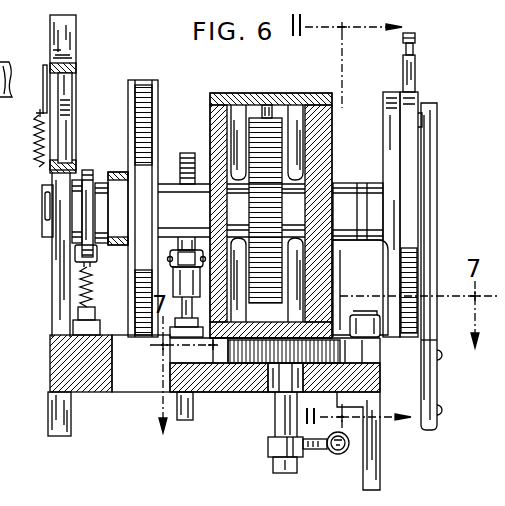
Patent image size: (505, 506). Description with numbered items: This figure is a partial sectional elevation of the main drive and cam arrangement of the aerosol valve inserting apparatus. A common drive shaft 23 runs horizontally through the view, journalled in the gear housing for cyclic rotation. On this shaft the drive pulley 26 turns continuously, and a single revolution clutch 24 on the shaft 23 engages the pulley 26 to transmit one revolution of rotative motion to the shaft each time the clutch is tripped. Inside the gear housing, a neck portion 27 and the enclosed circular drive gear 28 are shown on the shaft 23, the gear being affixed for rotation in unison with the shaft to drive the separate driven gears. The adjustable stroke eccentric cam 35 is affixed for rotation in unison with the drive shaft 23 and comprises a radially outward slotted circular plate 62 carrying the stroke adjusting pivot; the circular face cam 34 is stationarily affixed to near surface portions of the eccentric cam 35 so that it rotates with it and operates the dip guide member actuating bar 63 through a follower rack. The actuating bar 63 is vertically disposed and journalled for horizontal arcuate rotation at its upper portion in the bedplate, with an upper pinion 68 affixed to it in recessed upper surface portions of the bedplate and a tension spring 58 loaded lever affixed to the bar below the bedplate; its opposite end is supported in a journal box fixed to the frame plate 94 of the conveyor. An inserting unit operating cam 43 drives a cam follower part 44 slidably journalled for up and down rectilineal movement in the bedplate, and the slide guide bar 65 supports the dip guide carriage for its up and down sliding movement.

The common drive shaft 23 is at (428, 201).
The clutch 24 is at (118, 172).
The drive pulley 26 is at (158, 86).
The shaft neck 27 is at (265, 105).
The gear 28 is at (270, 118).
The circular face cam 34 is at (384, 275).
The adjustable stroke eccentric cam 35 is at (421, 143).
The inserting unit operating cam 43 is at (192, 152).
The cam follower part 44 is at (178, 421).
The tension spring 58 is at (330, 451).
The slotted circular plate 62 is at (420, 250).
The actuating bar 63 is at (277, 419).
The slide guide bar 65 is at (381, 466).
The upper pinion 68 is at (256, 338).
The frame plate 94 is at (0, 427).